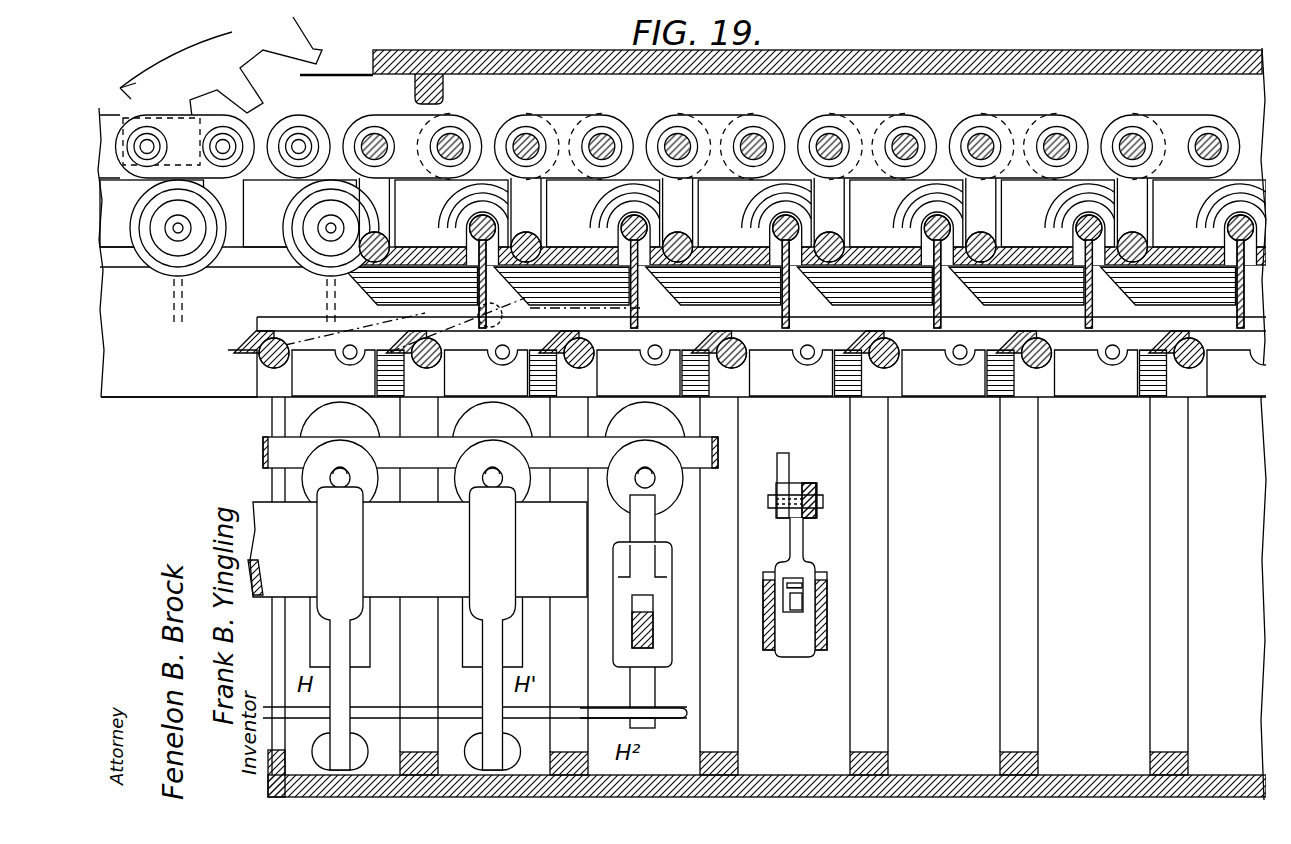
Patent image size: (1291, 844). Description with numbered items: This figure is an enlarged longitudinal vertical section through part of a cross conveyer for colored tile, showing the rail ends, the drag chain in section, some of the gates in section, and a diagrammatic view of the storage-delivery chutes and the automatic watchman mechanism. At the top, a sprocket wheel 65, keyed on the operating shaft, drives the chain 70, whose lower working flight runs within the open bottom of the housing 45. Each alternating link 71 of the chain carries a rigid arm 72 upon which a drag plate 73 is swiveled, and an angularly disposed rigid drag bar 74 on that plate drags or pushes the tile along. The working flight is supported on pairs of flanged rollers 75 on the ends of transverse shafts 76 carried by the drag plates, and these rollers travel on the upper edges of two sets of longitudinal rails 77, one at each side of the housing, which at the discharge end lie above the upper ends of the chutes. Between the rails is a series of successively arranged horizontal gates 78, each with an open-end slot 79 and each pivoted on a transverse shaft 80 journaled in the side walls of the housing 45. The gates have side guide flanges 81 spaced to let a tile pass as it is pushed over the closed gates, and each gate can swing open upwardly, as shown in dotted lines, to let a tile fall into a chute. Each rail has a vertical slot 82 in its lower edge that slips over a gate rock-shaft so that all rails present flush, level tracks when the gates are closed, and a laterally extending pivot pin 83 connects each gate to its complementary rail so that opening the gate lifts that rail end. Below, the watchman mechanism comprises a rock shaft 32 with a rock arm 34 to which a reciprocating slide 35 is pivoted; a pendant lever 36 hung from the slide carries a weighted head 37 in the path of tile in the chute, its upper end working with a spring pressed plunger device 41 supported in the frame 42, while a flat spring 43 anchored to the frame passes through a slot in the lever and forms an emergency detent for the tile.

The rock shaft 32 is at (417, 549).
The rock arm 34 is at (341, 700).
The reciprocating slide 35 is at (508, 752).
The pendant lever 36 is at (788, 463).
The weighted head 37 is at (856, 624).
The spring pressed plunger device 41 is at (462, 468).
The frame 42 is at (283, 452).
The flat spring 43 is at (802, 597).
The housing 45 is at (935, 52).
The sprocket wheel 65 is at (300, 50).
The chain 70 is at (495, 120).
The alternating link 71 is at (572, 117).
The rigid arm 72 is at (690, 221).
The drag plate 73 is at (868, 247).
The drag bar 74 is at (852, 330).
The flanged rollers 75 is at (160, 260).
The transverse shafts 76 is at (183, 226).
The rails 77 is at (161, 377).
The gates 78 is at (1158, 345).
The open-end slot 79 is at (1092, 368).
The transverse shaft 80 is at (886, 368).
The side guide flanges 81 is at (277, 327).
The vertical slot 82 is at (707, 382).
The pivot pin 83 is at (503, 353).